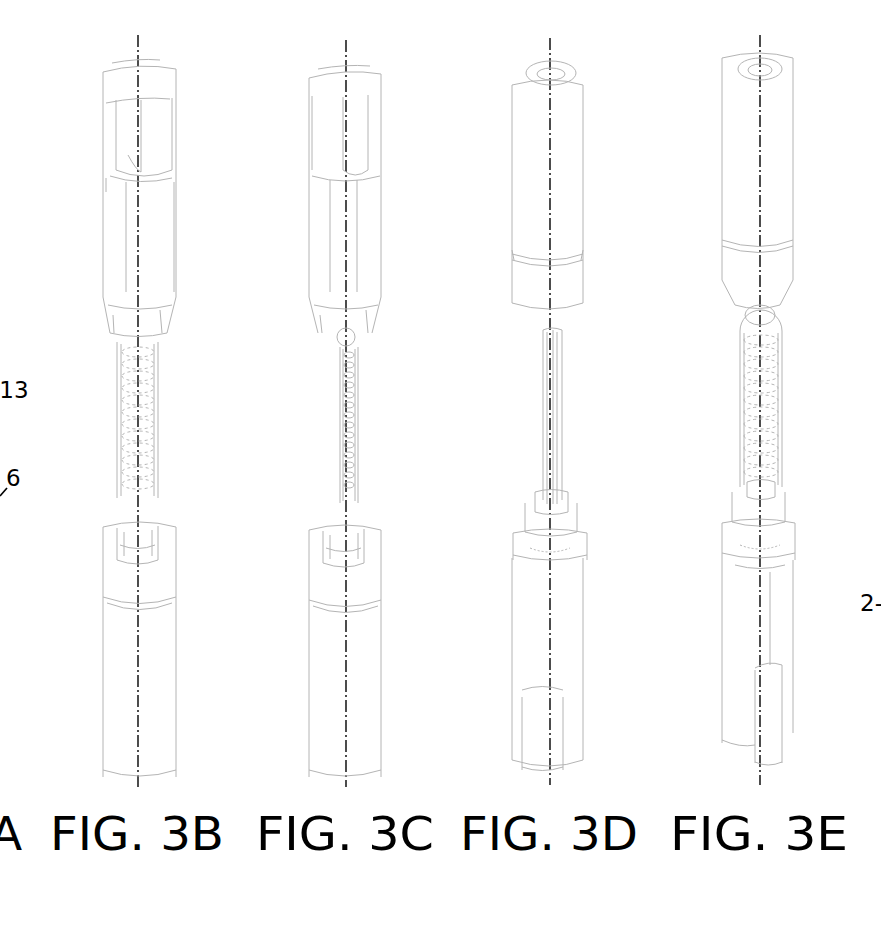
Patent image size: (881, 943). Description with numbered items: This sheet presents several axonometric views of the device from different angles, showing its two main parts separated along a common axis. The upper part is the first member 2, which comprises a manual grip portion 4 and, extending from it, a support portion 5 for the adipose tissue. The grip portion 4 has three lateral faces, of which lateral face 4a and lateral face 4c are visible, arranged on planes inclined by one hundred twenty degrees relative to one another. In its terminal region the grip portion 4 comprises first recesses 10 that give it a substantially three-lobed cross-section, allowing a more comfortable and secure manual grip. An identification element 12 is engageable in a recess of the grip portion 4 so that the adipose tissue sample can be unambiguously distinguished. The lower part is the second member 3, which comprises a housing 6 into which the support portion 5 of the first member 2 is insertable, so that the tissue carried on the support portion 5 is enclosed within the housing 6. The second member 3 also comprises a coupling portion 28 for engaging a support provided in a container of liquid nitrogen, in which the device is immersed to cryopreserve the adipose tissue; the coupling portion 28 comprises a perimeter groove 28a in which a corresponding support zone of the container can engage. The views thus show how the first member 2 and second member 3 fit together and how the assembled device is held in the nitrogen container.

In FIG. 3B, the first member 2 is at (104, 265).
In FIG. 3C, the first member 2 is at (345, 321).
In FIG. 3D, the first member 2 is at (510, 580).
In FIG. 3E, the first member 2 is at (720, 580).
In FIG. 3B, the second member 3 is at (104, 665).
In FIG. 3C, the second member 3 is at (312, 665).
In FIG. 3D, the second member 3 is at (600, 110).
In FIG. 3E, the second member 3 is at (810, 110).
In FIG. 3B, the manual grip portion 4 is at (182, 94).
In FIG. 3C, the manual grip portion 4 is at (378, 172).
In FIG. 3D, the manual grip portion 4 is at (516, 692).
In FIG. 3E, the manual grip portion 4 is at (798, 692).
In FIG. 3B, the lateral face 4a is at (166, 172).
In FIG. 3C, the lateral face 4a is at (382, 212).
In FIG. 3B, the lateral face 4c is at (116, 184).
In FIG. 3B, the support portion 5 is at (166, 400).
In FIG. 3C, the support portion 5 is at (376, 400).
In FIG. 3D, the support portion 5 is at (586, 400).
In FIG. 3E, the support portion 5 is at (796, 400).
In FIG. 3B, the housing 6 is at (138, 545).
In FIG. 3C, the housing 6 is at (348, 545).
In FIG. 3C, the first recesses 10 is at (312, 106).
In FIG. 3B, the identification element 12 is at (160, 230).
In FIG. 3C, the identification element 12 is at (330, 250).
In FIG. 3E, the identification element 12 is at (730, 635).
In FIG. 3D, the coupling portion 28 is at (590, 252).
In FIG. 3D, the perimeter groove 28a is at (582, 268).